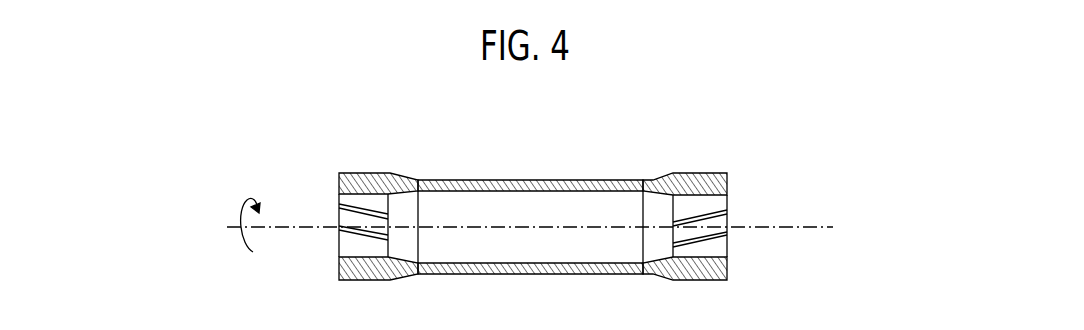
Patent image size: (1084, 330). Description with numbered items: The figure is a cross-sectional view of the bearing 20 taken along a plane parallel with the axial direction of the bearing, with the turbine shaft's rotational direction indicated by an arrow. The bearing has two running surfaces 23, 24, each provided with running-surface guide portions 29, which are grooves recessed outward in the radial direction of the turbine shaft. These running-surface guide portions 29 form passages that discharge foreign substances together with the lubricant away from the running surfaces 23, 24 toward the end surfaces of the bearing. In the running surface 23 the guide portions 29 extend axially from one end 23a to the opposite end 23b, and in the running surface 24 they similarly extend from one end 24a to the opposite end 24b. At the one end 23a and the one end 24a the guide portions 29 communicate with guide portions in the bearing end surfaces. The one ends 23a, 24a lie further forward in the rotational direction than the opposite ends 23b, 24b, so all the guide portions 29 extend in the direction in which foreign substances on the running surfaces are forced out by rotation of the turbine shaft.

The bearing 20 is at (472, 184).
The running surface 23 is at (377, 200).
The one end of the running surface 23a is at (339, 216).
The opposite end of the running surface 23b is at (390, 223).
The running surface 24 is at (693, 207).
The one end of the running surface 24a is at (727, 207).
The opposite end of the running surface 24b is at (673, 210).
The running-surface guide portion 29 is at (338, 229).